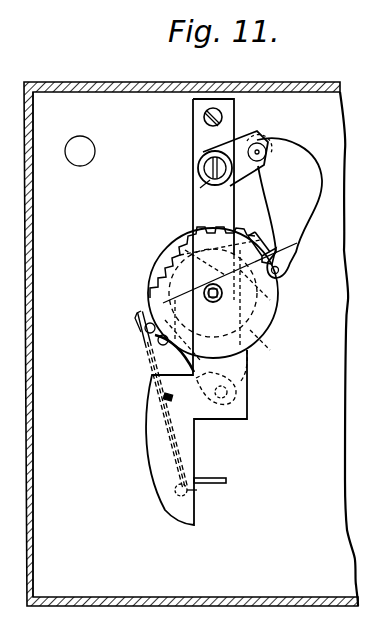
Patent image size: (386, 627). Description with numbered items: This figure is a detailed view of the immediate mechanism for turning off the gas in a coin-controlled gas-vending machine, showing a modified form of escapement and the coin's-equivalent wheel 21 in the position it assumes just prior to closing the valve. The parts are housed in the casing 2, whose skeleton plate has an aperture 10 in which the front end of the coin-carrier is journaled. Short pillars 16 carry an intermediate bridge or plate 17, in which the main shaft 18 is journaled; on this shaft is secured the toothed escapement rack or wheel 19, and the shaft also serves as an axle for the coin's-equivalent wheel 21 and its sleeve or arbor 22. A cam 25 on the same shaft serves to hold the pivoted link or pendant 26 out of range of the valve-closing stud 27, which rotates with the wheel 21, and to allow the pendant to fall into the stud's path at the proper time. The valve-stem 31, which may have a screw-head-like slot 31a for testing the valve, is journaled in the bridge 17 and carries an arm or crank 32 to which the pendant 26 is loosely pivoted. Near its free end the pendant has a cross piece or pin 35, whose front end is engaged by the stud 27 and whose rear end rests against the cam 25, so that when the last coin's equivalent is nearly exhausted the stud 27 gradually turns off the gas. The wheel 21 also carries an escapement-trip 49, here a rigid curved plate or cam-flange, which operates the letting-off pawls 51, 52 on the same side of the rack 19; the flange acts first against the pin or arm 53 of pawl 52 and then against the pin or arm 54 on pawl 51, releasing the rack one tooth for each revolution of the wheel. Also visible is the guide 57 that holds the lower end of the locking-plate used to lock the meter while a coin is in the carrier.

The casing 2 is at (27, 509).
The aperture 10 is at (80, 151).
The short pillars 16 is at (204, 118).
The intermediate bridge or plate 17 is at (196, 312).
The main shaft 18 is at (215, 308).
The toothed escapement rack or wheel 19 is at (170, 249).
The coin's-equivalent wheel 21 is at (192, 233).
The sleeve or arbor 22 is at (222, 297).
The cam 25 is at (198, 293).
The pivoted link or pendant 26 is at (289, 208).
The valve-closing stud 27 is at (290, 244).
The valve-stem 31 is at (200, 168).
The slot 31a is at (200, 188).
The arm or crank 32 is at (257, 136).
The cross piece or pin 35 is at (279, 270).
The escapement-trip 49 is at (258, 232).
The letting-off pawl 51 is at (157, 342).
The letting-off pawl 52 is at (198, 380).
The pin or arm 53 is at (170, 352).
The pin or arm 54 is at (144, 330).
The guide 57 is at (212, 485).